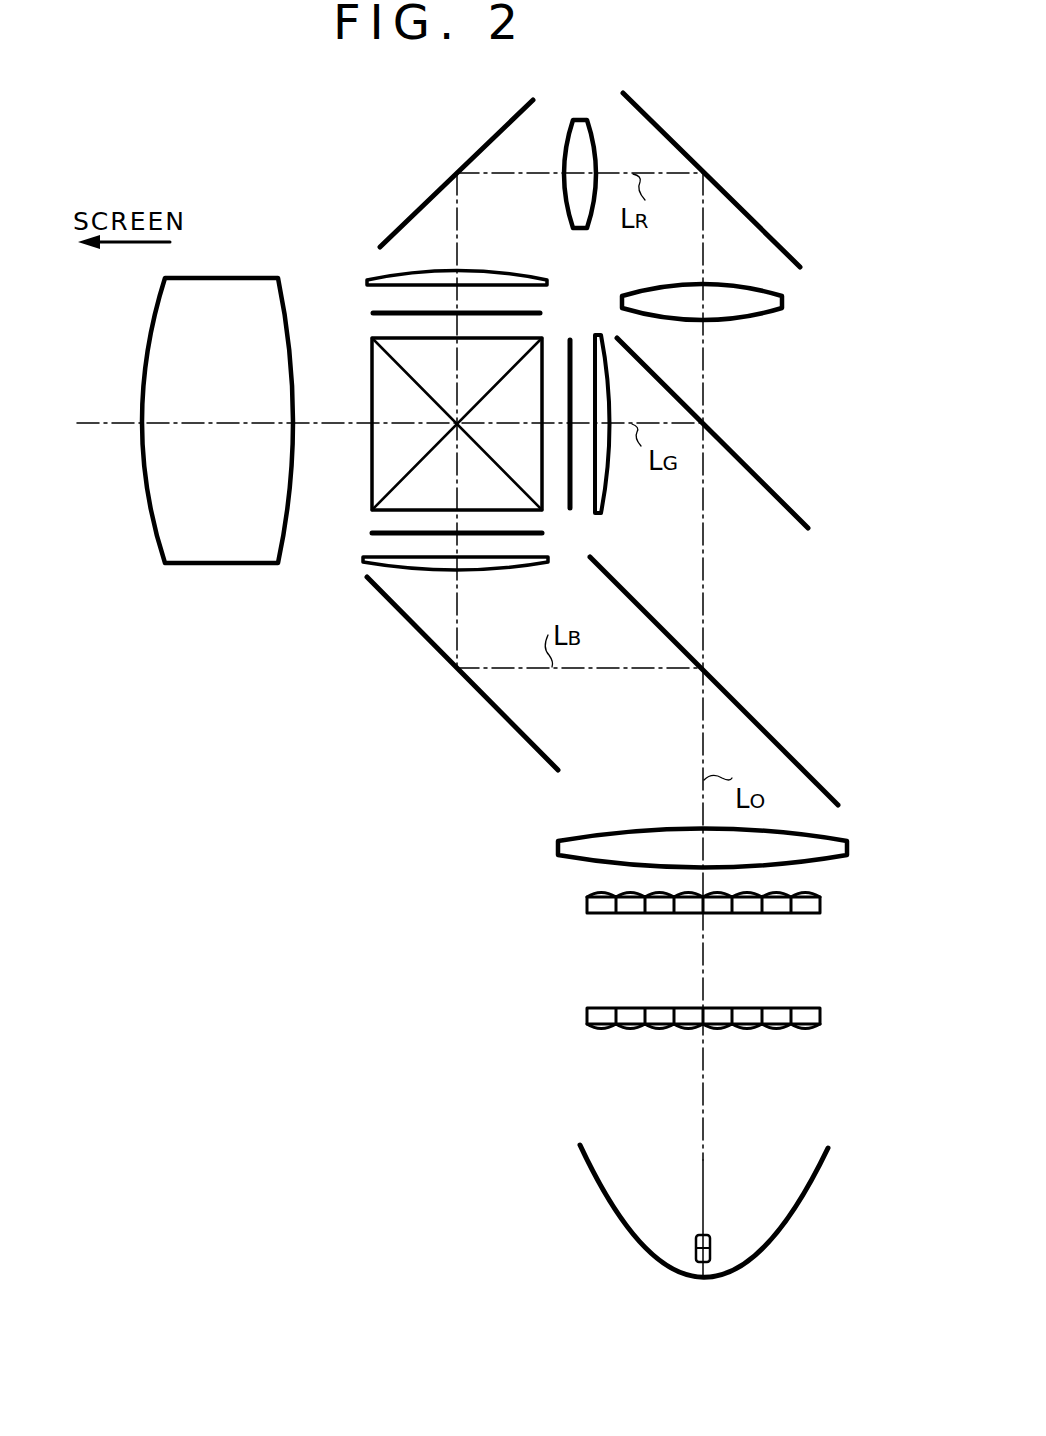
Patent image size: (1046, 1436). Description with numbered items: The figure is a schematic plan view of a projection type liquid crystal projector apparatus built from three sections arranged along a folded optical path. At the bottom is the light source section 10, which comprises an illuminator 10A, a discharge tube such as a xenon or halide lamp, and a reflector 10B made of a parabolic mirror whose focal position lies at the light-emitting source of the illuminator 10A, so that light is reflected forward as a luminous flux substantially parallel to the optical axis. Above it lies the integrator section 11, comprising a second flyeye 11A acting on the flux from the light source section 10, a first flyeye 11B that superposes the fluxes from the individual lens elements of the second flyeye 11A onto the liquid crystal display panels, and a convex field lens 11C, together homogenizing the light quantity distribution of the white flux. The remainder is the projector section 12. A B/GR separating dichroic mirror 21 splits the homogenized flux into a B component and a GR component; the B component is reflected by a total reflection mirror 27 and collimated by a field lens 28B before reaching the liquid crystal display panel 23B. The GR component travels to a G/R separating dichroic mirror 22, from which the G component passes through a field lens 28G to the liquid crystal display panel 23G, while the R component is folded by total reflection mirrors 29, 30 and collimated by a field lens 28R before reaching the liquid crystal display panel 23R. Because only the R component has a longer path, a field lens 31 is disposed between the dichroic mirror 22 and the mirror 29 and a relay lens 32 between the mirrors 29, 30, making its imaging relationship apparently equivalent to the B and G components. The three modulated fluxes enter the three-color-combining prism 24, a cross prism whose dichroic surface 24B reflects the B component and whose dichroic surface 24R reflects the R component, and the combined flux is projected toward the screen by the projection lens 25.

The light source section 10 is at (810, 1206).
The illuminator 10A is at (711, 1243).
The reflector 10B is at (822, 1160).
The integrator section 11 is at (560, 966).
The second flyeye 11A is at (587, 1020).
The first flyeye 11B is at (587, 905).
The convex field lens 11C is at (558, 848).
The projector section 12 is at (776, 605).
The B/GR separating dichroic mirror 21 is at (834, 800).
The G/R separating dichroic mirror 22 is at (805, 525).
The liquid crystal display panel 23R is at (378, 316).
The liquid crystal display panel 23G is at (567, 345).
The liquid crystal display panel 23B is at (376, 525).
The three-color-combining prism 24 is at (426, 424).
The dichroic surface 24R is at (482, 400).
The dichroic surface 24B is at (485, 452).
The projection lens 25 is at (250, 278).
The total reflection mirror 27 is at (553, 757).
The field lens 28R is at (377, 270).
The field lens 28G is at (604, 332).
The field lens 28B is at (365, 562).
The total reflection mirror 29 is at (796, 265).
The total reflection mirror 30 is at (533, 104).
The field lens 31 is at (765, 318).
The relay lens 32 is at (587, 118).